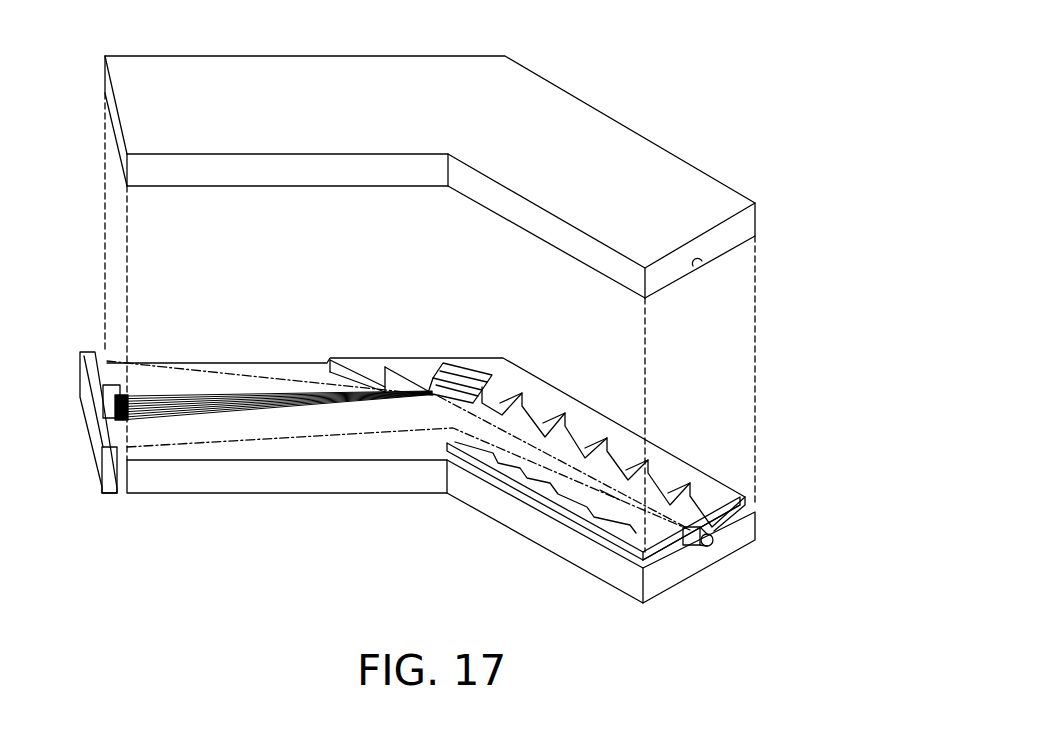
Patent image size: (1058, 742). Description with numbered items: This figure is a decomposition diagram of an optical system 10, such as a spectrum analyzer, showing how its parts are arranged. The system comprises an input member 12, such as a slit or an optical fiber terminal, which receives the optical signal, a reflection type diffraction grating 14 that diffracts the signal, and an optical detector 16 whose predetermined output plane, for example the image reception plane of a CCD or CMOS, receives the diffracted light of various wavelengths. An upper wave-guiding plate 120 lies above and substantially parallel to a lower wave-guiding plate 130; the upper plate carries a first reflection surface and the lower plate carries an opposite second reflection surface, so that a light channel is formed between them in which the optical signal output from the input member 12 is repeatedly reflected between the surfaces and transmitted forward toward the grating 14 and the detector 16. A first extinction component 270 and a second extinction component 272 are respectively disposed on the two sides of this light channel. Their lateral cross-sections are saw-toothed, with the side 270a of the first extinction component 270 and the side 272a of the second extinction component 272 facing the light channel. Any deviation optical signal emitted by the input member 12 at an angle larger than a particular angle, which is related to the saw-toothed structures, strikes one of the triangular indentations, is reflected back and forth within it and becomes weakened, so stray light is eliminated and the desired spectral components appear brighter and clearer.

The optical system 10 is at (807, 31).
The upper wave-guiding plate 120 is at (620, 143).
The lower wave-guiding plate 130 is at (213, 477).
The optical detector 16 is at (110, 402).
The reflection type diffraction grating 14 is at (453, 382).
The second extinction component 272 is at (655, 455).
The side of the second extinction component 272a is at (568, 438).
The first extinction component 270 is at (607, 518).
The side of the first extinction component 270a is at (615, 500).
The input member 12 is at (687, 540).